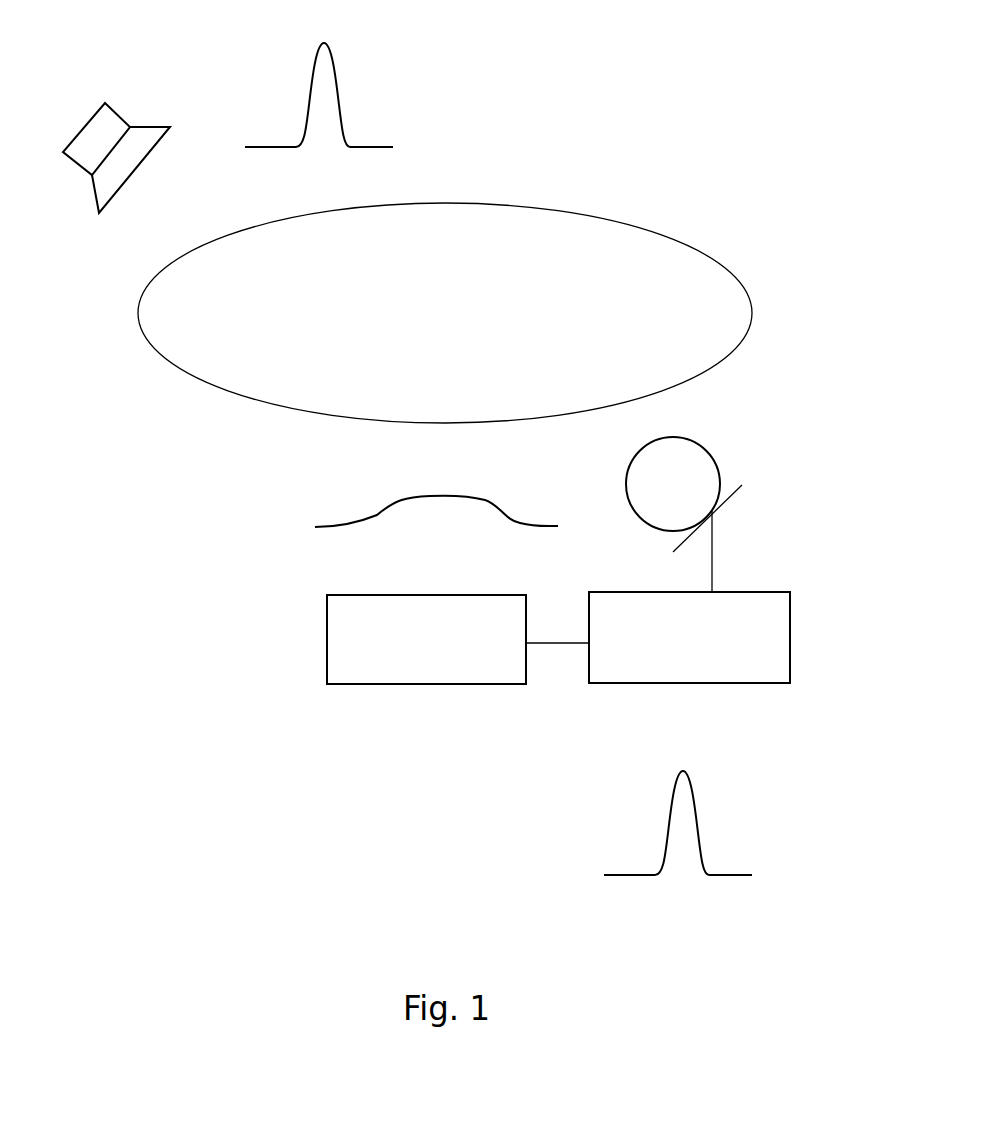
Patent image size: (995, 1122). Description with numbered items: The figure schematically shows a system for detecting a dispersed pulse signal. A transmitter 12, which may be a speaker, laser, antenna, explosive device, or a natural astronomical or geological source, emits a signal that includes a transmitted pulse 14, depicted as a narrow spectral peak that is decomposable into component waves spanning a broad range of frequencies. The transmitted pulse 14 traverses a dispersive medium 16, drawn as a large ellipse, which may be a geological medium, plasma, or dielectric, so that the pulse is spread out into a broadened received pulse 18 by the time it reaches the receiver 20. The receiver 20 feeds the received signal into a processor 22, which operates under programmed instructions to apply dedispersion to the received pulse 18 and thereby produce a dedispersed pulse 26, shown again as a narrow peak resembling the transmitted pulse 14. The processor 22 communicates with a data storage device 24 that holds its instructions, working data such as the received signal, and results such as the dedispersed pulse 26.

The transmitter 12 is at (95, 117).
The transmitted pulse 14 is at (308, 100).
The dispersive medium 16 is at (568, 209).
The received pulse 18 is at (378, 510).
The receiver 20 is at (718, 466).
The processor 22 is at (790, 637).
The data storage device 24 is at (325, 638).
The dedispersed pulse 26 is at (668, 827).